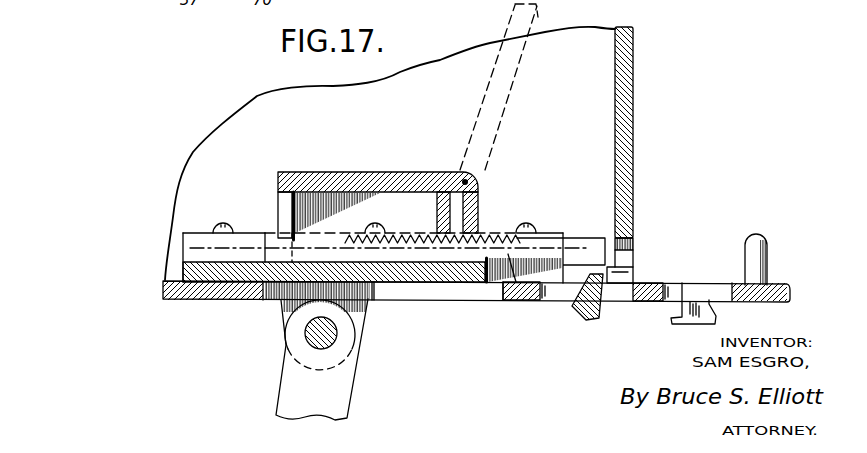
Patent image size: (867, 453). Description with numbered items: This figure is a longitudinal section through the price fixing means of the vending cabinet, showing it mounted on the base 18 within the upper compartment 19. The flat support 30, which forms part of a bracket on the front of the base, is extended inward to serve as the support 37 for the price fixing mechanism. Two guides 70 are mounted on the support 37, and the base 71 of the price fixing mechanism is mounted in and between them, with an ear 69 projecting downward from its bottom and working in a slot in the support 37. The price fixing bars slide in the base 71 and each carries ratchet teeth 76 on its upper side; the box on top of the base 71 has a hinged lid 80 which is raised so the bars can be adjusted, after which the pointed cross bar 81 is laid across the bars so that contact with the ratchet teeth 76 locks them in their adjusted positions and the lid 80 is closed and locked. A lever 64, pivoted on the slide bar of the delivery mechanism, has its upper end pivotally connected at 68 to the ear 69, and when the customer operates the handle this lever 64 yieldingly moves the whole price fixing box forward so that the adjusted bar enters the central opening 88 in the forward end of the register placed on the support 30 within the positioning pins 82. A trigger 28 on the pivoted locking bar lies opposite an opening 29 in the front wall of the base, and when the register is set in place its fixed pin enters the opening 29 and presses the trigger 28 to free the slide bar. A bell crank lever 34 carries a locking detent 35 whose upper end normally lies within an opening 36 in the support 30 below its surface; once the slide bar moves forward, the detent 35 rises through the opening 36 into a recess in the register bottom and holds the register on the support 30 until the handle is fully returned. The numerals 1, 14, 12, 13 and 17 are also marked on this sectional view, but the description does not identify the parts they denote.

The housing 1 is at (610, 60).
The base 18 is at (633, 137).
The upper compartment 19 is at (278, 207).
The hinged lid 80 is at (540, 14).
The pointed cross bar 81 is at (437, 207).
The ratchet teeth 76 is at (400, 238).
The guides 70 is at (545, 233).
The rod 14 is at (578, 250).
The central opening 88 is at (633, 245).
The opening 29 is at (633, 275).
The locking detent 35 is at (692, 288).
The opening 36 is at (715, 297).
The positioning pins 82 is at (753, 257).
The flat support 30 is at (777, 288).
The bell crank lever 34 is at (695, 286).
The trigger 28 is at (618, 283).
The block 13 is at (518, 303).
The base section 12 is at (487, 292).
The rod end 17 is at (187, 225).
The support 37 is at (188, 300).
The base of the price fixing mechanism 71 is at (239, 272).
The ear 69 is at (357, 312).
The pivotal connection 68 is at (332, 338).
The lever 64 is at (325, 390).